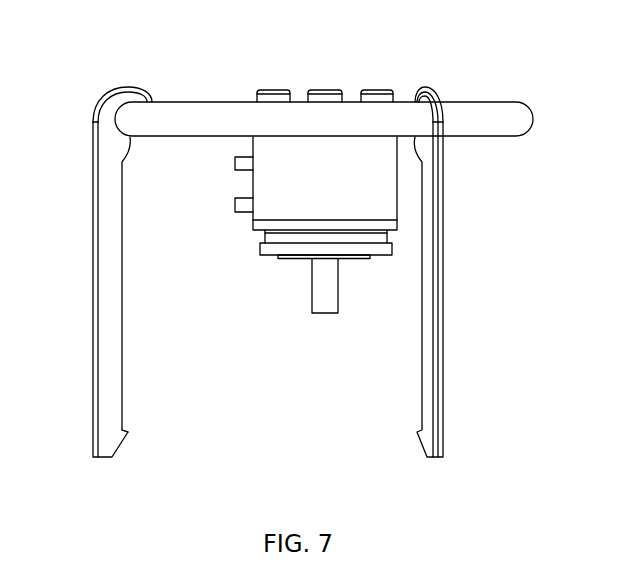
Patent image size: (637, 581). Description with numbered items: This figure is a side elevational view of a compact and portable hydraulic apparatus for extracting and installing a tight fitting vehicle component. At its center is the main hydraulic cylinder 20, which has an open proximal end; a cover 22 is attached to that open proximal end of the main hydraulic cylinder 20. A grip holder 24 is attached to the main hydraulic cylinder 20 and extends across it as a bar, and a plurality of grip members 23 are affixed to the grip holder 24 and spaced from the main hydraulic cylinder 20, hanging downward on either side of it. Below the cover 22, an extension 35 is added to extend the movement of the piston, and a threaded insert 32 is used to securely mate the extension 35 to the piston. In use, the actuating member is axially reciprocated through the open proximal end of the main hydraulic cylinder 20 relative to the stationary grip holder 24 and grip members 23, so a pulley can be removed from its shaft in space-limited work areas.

The main hydraulic cylinder 20 is at (336, 185).
The cover 22 is at (262, 240).
The grip members 23 is at (108, 203).
The grip holder 24 is at (513, 65).
The threaded inserts 32 is at (295, 258).
The extensions 35 is at (320, 302).